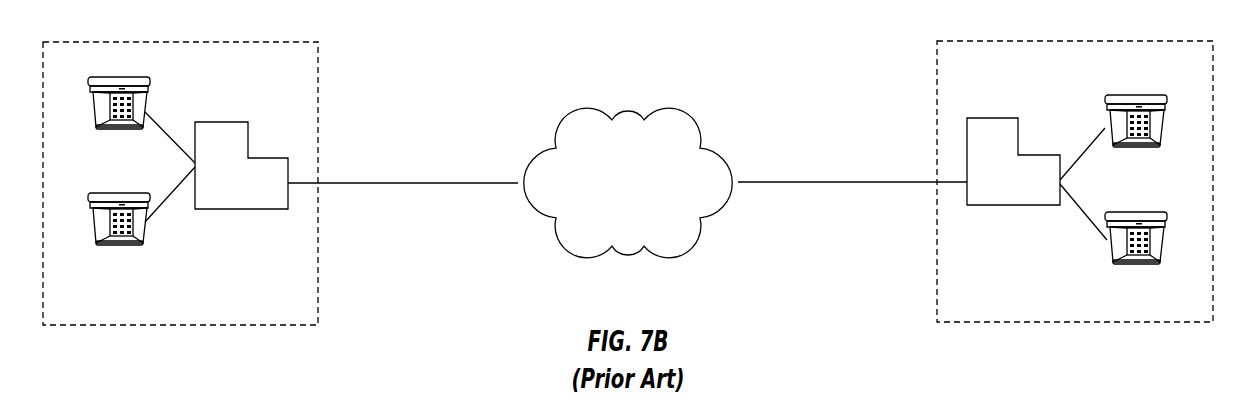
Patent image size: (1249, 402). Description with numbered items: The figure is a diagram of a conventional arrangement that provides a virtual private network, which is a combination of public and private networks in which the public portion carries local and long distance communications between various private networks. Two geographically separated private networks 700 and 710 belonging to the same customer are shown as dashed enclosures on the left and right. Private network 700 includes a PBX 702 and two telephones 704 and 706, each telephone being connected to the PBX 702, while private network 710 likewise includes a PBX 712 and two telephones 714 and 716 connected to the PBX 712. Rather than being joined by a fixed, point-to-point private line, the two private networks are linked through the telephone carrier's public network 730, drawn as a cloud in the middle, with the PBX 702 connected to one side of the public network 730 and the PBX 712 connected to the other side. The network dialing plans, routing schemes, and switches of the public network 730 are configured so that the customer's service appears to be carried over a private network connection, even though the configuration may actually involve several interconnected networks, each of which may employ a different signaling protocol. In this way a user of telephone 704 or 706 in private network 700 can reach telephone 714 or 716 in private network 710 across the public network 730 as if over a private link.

The private network 700 is at (100, 42).
The PBX 702 is at (220, 121).
The telephone 704 is at (118, 129).
The telephone 706 is at (115, 246).
The private network 710 is at (1157, 41).
The PBX 712 is at (990, 118).
The telephone 714 is at (1140, 147).
The telephone 716 is at (1140, 264).
The public network 730 is at (664, 110).